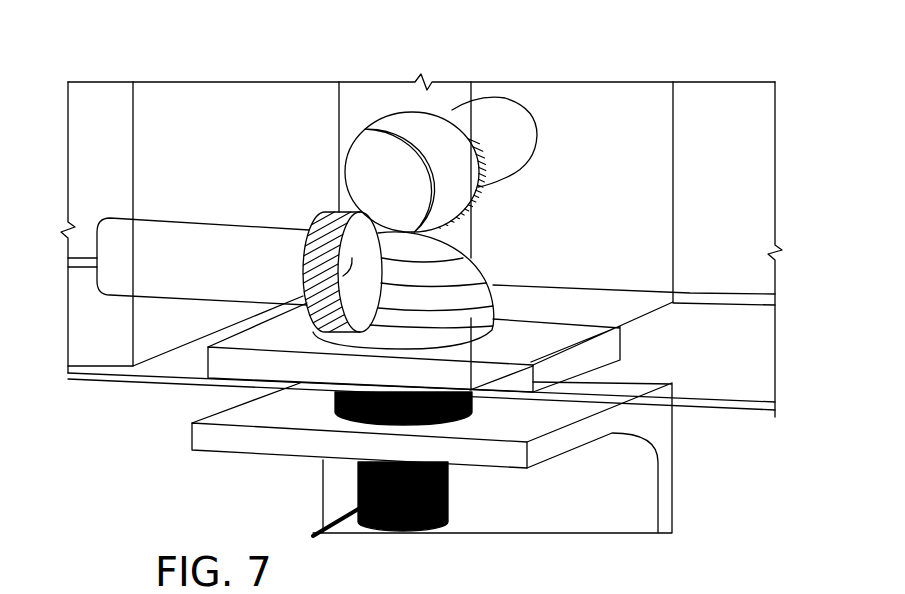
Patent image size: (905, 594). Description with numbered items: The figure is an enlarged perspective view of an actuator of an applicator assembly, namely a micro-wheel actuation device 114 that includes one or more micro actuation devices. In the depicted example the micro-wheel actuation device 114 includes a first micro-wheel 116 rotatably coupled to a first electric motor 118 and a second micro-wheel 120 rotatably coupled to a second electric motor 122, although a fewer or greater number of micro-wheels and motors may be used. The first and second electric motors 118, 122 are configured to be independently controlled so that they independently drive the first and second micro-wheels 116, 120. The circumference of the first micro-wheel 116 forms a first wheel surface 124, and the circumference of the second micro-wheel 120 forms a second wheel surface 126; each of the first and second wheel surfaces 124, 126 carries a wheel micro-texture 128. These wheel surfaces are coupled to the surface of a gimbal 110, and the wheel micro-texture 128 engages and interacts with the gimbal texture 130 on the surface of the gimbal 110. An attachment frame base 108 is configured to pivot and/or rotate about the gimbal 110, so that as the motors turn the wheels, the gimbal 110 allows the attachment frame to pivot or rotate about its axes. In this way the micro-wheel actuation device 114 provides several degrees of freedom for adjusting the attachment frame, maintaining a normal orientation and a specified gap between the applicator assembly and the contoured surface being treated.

The attachment frame base 108 is at (510, 455).
The gimbal 110 is at (493, 322).
The micro-wheel actuation device 114 is at (196, 68).
The first micro-wheel 116 is at (305, 293).
The first electric motor 118 is at (222, 273).
The second micro-wheel 120 is at (400, 160).
The second electric motor 122 is at (550, 111).
The first wheel surface 124 is at (323, 228).
The second wheel surface 126 is at (452, 110).
The wheel micro-texture 128 is at (432, 117).
The gimbal texture 130 is at (475, 290).